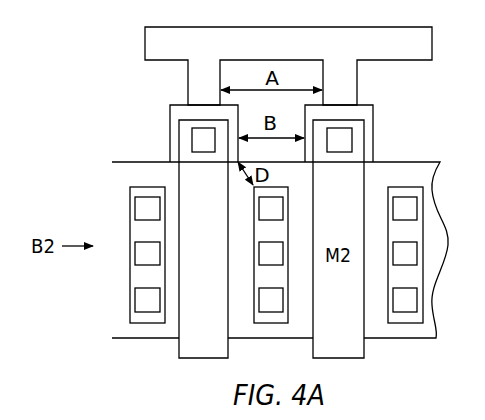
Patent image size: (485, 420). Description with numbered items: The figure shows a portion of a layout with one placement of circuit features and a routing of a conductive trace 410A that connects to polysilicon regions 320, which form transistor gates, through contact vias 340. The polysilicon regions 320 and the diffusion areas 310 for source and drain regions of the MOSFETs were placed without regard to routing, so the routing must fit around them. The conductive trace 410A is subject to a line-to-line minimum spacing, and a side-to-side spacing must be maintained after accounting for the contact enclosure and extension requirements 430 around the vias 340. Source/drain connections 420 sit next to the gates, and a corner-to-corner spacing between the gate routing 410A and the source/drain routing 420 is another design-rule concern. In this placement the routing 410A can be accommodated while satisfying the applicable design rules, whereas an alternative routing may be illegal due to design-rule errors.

The conductive trace 410A is at (250, 53).
The contact via 340 is at (192, 141).
The contact enclosure and extension requirements 430 is at (367, 105).
The diffusion area 310 is at (413, 161).
The source/drain connection 420 is at (270, 320).
The polysilicon region 320 is at (179, 346).